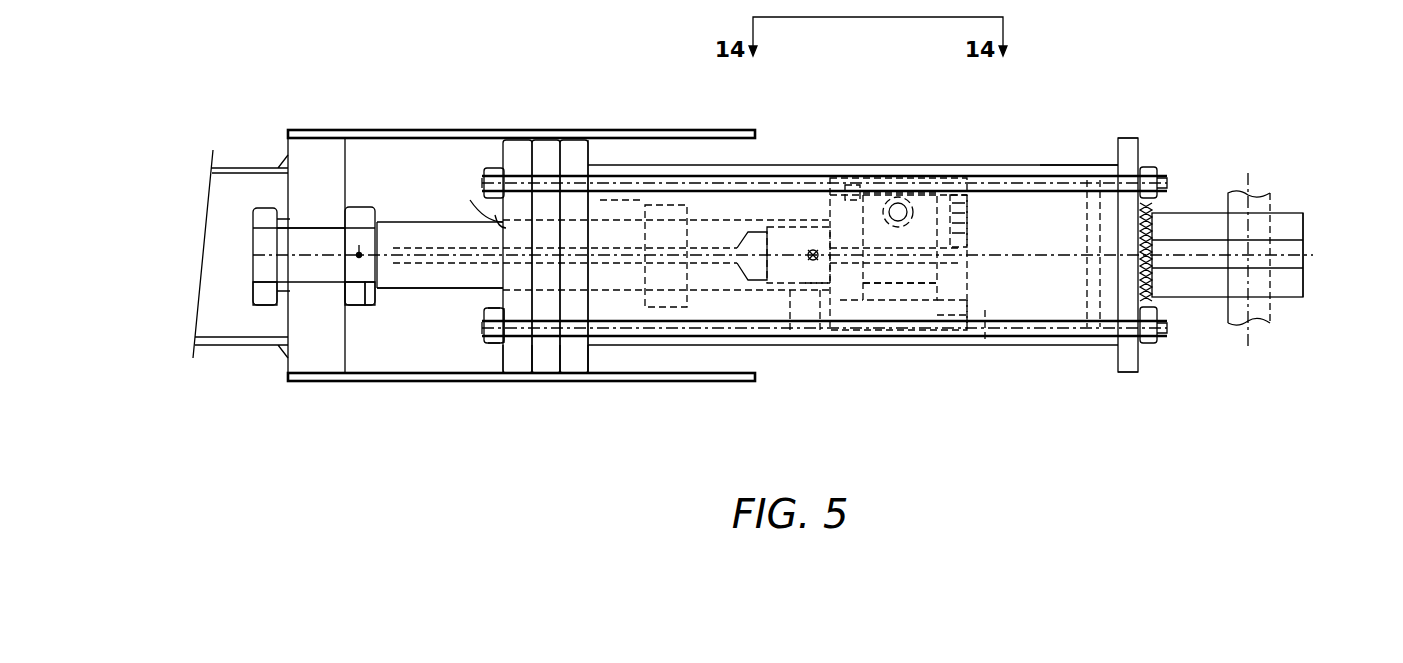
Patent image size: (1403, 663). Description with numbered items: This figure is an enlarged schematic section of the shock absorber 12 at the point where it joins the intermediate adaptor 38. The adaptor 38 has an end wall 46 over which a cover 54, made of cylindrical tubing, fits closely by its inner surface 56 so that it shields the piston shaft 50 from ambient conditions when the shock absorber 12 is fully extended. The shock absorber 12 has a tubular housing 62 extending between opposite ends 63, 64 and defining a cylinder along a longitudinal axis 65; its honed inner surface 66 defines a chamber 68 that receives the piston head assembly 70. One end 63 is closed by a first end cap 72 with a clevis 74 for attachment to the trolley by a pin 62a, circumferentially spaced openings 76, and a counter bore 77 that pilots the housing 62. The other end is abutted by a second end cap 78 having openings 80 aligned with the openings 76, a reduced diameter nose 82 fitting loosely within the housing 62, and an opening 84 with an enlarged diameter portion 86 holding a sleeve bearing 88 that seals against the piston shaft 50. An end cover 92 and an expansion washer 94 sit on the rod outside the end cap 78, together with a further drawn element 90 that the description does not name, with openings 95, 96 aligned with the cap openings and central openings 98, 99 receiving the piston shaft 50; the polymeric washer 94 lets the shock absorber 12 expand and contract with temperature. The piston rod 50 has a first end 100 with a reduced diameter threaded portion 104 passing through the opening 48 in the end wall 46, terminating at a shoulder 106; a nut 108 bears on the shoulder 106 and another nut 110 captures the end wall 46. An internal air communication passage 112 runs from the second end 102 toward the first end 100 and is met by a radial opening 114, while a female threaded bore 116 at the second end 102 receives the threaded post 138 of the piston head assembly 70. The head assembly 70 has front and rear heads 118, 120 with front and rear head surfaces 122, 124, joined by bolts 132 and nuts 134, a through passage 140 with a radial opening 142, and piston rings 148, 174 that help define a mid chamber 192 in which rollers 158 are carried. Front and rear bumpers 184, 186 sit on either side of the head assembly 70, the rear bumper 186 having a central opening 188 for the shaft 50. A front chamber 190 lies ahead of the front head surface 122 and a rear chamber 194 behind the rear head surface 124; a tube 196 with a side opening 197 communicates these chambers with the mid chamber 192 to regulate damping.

The shock absorber 12 is at (986, 133).
The intermediate adaptor 38 is at (229, 152).
The end wall 46 is at (302, 150).
The opening 48 is at (305, 243).
The piston shaft 50 is at (455, 291).
The cover 54 is at (440, 136).
The inner surface 56 is at (400, 140).
The housing 62 is at (1073, 163).
The pin 62a is at (1256, 193).
The end 63 is at (1137, 165).
The end 64 is at (575, 160).
The longitudinal axis 65 is at (1283, 247).
The inner surface 66 is at (1045, 347).
The chamber 68 is at (1080, 347).
The piston head assembly 70 is at (812, 198).
The first end cap 72 is at (1140, 372).
The clevis 74 is at (1305, 285).
The openings 76 is at (1160, 178).
The counter bore 77 is at (1110, 350).
The second end cap 78 is at (582, 160).
The openings 80 is at (597, 165).
The nose 82 is at (632, 160).
The opening 84 is at (630, 340).
The enlarged diameter portion 86 is at (647, 204).
The sleeve bearing 88 is at (572, 346).
The spacer plate 90 is at (556, 160).
The end cover 92 is at (514, 346).
The expansion washer 94 is at (545, 346).
The openings 95 is at (513, 346).
The openings 96 is at (498, 332).
The central opening 98 is at (500, 225).
The central opening 99 is at (494, 216).
The first end 100 is at (252, 258).
The second end 102 is at (870, 347).
The reduced diameter threaded portion 104 is at (320, 282).
The shoulder 106 is at (365, 307).
The nut 108 is at (356, 307).
The nut 110 is at (262, 306).
The air communication passage 112 is at (390, 245).
The opening 114 is at (378, 220).
The female threaded bore 116 is at (786, 227).
The front head 118 is at (986, 347).
The rear head 120 is at (822, 346).
The front head surface 122 is at (975, 287).
The rear head surface 124 is at (805, 346).
The bolts 132 is at (968, 218).
The nuts 134 is at (860, 185).
The threaded post 138 is at (832, 245).
The through passage 140 is at (778, 346).
The opening 142 is at (790, 346).
The piston ring 148 is at (855, 347).
The rollers 158 is at (898, 228).
The second piston ring 174 is at (952, 347).
The front bumper 184 is at (1100, 175).
The rear bumper 186 is at (665, 340).
The central opening 188 is at (695, 163).
The front chamber 190 is at (1047, 176).
The mid chamber 192 is at (912, 347).
The rear chamber 194 is at (738, 352).
The tube 196 is at (930, 340).
The opening 197 is at (905, 255).